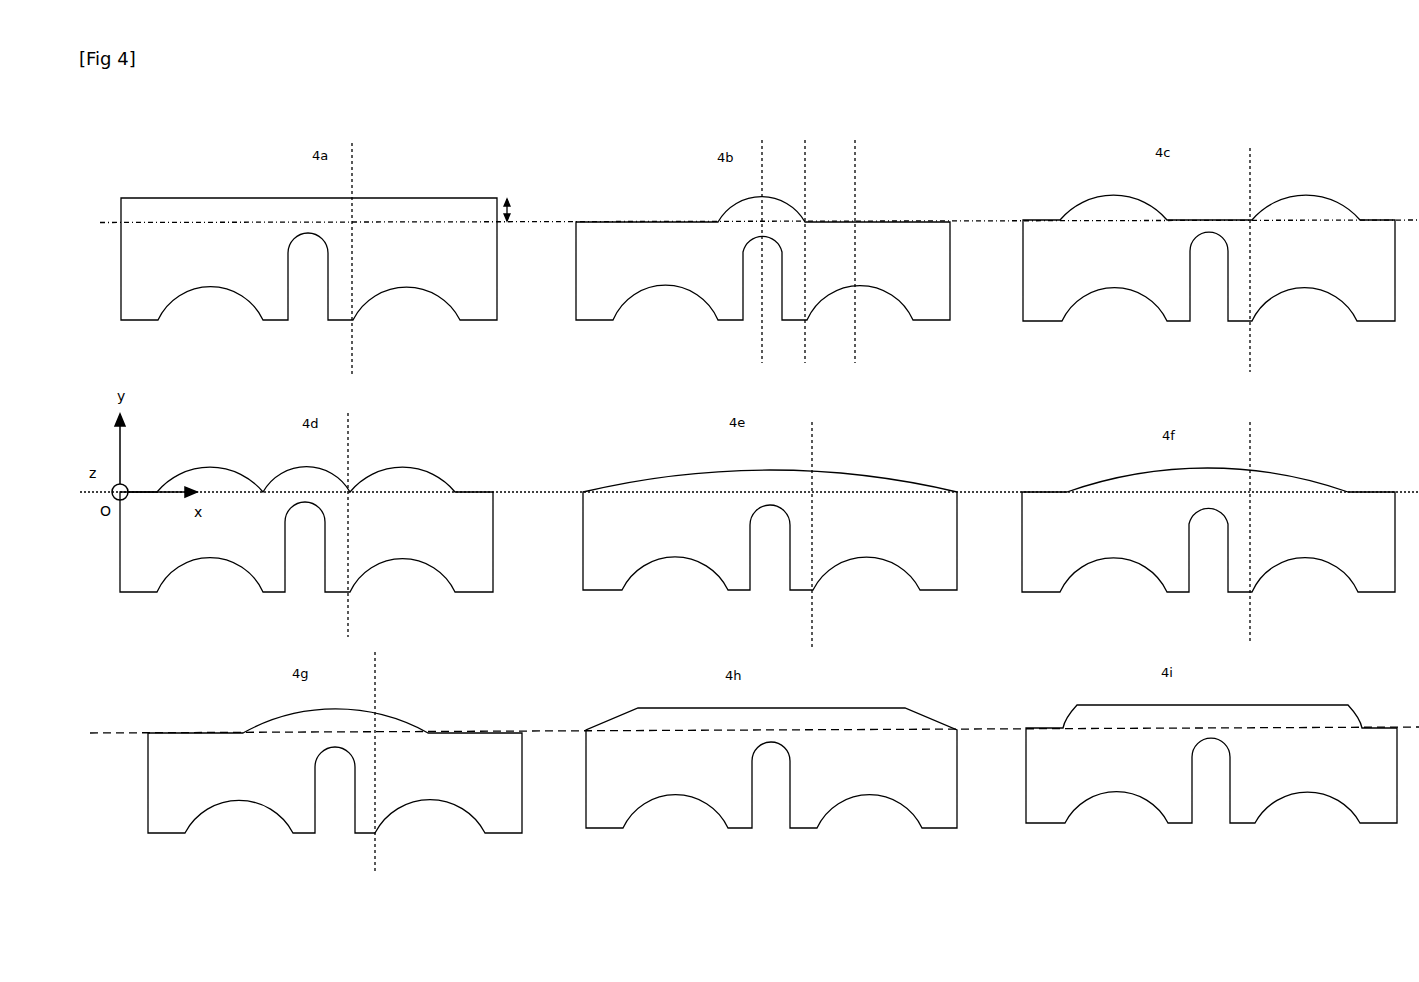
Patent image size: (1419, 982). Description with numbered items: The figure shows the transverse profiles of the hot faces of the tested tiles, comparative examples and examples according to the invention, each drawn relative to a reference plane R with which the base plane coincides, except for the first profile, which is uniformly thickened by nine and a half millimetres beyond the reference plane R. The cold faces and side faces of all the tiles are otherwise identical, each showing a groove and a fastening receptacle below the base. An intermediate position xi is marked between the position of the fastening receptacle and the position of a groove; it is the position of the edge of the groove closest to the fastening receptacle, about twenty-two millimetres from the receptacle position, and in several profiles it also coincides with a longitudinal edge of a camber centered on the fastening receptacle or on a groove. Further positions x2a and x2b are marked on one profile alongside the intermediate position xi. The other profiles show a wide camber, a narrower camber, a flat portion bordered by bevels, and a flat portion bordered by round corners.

The reference plane R is at (570, 221).
The intermediate position xi is at (797, 494).
The position x_2a x2a is at (753, 239).
The position x_2b x2b is at (855, 239).